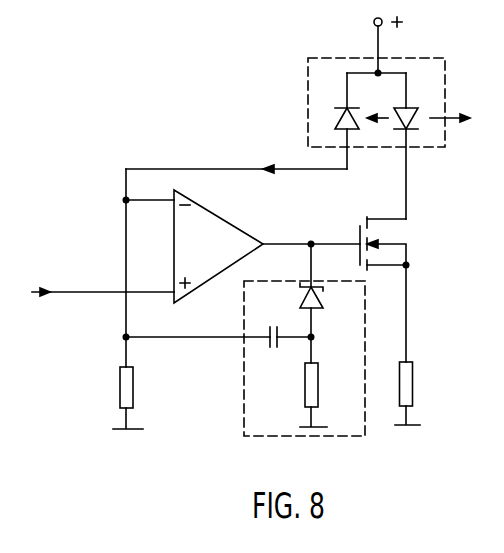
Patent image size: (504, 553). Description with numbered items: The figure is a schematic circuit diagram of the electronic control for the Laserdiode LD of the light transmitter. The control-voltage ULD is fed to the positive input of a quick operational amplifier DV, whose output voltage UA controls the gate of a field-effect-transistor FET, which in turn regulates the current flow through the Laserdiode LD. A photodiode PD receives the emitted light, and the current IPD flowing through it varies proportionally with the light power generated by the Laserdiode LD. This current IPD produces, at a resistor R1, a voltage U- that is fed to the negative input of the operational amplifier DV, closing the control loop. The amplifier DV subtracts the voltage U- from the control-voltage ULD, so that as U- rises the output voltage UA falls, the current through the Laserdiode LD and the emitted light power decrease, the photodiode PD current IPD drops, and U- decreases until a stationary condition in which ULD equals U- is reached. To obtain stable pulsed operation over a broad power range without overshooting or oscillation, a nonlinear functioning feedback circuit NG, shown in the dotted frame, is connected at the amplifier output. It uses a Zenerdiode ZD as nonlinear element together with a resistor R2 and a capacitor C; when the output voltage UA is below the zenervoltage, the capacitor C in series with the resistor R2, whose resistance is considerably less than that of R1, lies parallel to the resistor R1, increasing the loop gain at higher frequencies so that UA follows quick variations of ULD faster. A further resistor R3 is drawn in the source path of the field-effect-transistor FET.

The photodiode PD is at (353, 121).
The Laserdiode LD is at (432, 146).
The photodiode current IPD is at (236, 151).
The operational amplifier DV is at (218, 246).
The voltage at the negative input U- is at (160, 226).
The control-voltage ULD is at (103, 276).
The output voltage UA is at (311, 226).
The field-effect-transistor FET is at (408, 243).
The nonlinear functioning feedback circuit NG is at (304, 358).
The Zenerdiode ZD is at (324, 303).
The capacitor C is at (218, 352).
The resistor R1 is at (137, 398).
The resistor R2 is at (322, 395).
The resistor R3 is at (418, 345).